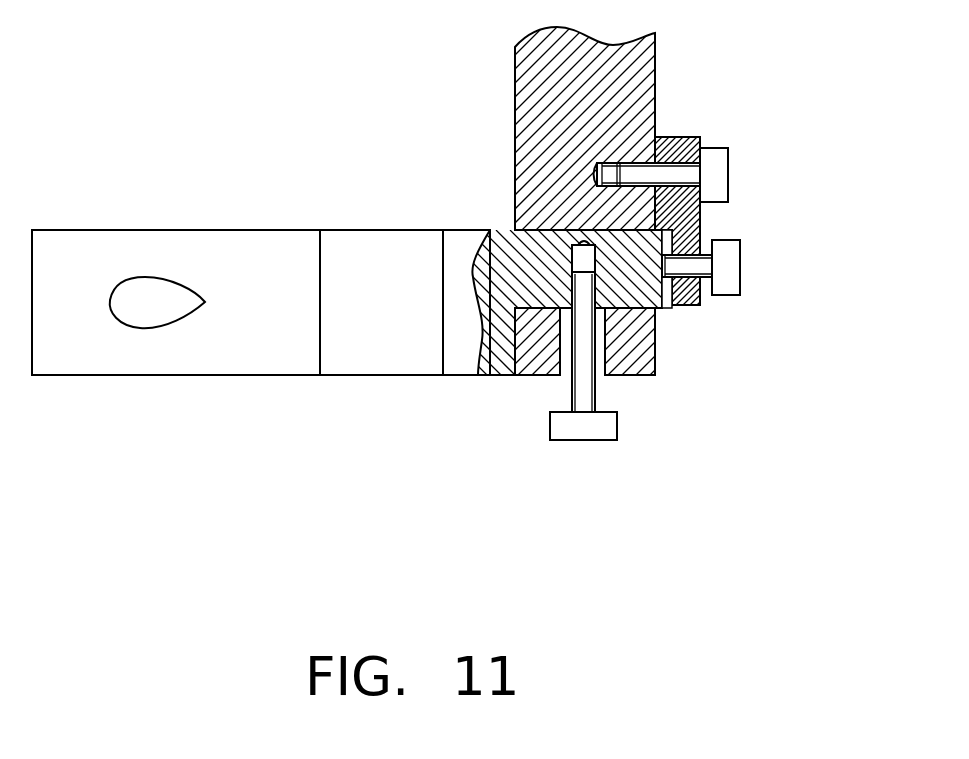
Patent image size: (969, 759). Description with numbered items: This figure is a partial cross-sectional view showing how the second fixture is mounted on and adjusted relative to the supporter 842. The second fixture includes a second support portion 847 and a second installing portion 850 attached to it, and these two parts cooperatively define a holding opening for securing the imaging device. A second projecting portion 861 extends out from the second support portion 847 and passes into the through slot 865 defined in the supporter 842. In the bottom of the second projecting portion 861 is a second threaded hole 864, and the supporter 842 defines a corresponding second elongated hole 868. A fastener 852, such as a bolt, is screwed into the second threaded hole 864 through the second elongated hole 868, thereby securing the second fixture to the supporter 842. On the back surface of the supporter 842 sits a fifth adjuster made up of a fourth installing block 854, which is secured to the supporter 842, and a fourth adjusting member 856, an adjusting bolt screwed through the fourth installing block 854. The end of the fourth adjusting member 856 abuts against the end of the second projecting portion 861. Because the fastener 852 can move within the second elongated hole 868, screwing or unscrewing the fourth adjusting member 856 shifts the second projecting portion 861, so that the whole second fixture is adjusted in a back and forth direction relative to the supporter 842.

The supporter 842 is at (652, 61).
The second support portion 847 is at (365, 253).
The second installing portion 850 is at (187, 253).
The fastener 852 is at (588, 392).
The fourth installing block 854 is at (690, 140).
The fourth adjusting member 856 is at (725, 267).
The second projecting portion 861 is at (543, 258).
The second threaded hole 864 is at (581, 240).
The through slot 865 is at (640, 315).
The second elongated hole 868 is at (565, 368).